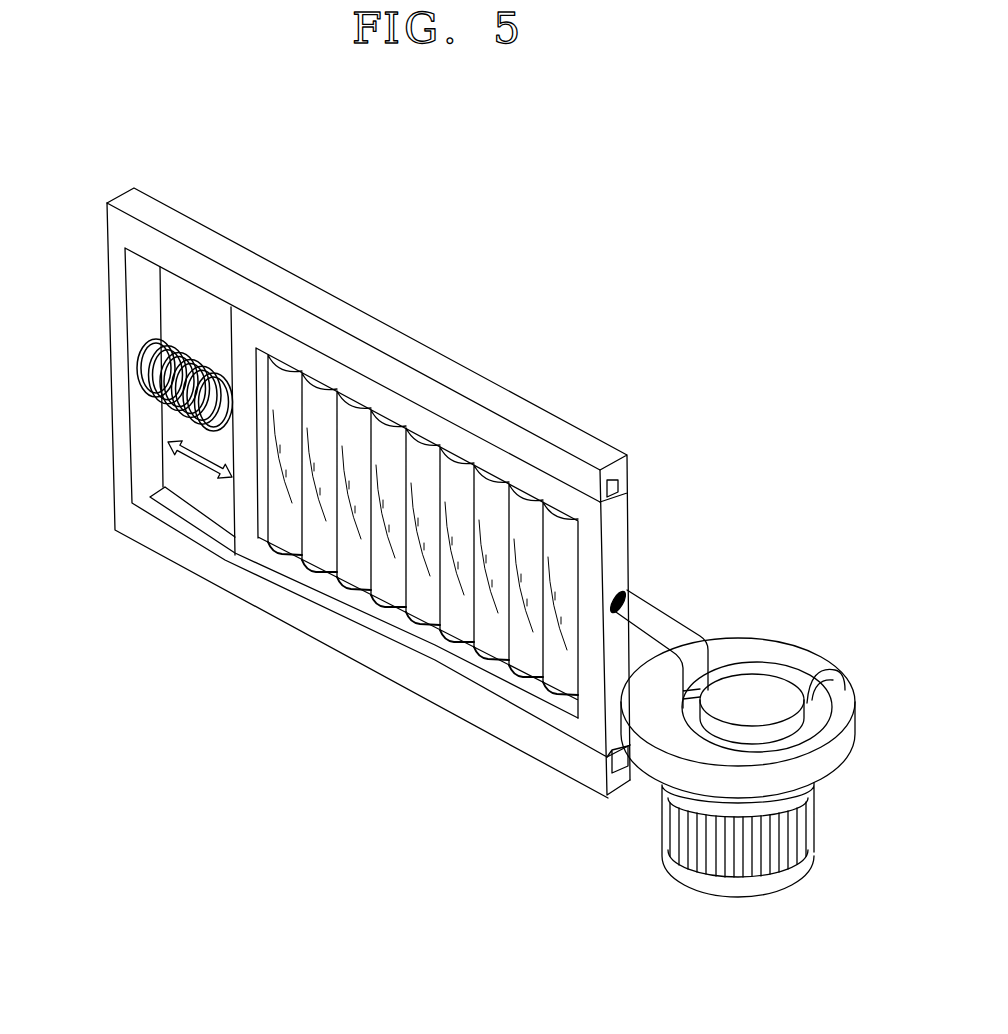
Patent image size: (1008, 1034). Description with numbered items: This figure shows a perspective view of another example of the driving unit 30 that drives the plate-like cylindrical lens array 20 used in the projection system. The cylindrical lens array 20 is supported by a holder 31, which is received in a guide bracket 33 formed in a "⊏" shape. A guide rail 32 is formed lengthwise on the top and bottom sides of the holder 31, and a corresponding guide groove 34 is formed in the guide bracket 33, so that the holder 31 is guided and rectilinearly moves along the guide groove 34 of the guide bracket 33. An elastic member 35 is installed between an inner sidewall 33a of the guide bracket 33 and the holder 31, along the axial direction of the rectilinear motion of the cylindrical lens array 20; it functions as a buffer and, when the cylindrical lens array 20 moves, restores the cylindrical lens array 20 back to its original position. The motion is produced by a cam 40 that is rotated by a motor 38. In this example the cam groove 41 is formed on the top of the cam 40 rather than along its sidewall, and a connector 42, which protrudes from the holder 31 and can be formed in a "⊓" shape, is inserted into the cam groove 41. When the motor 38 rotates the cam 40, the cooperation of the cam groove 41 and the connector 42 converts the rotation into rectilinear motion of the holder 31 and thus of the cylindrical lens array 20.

The cylindrical lens array 20 is at (518, 586).
The driving unit 30 is at (750, 617).
The holder 31 is at (244, 331).
The guide rail 32 is at (619, 491).
The guide bracket 33 is at (220, 570).
The inner sidewall 33a is at (137, 313).
The guide groove 34 is at (608, 462).
The elastic member 35 is at (148, 388).
The motor 38 is at (815, 848).
The cam 40 is at (792, 647).
The cam groove 41 is at (822, 670).
The connector 42 is at (672, 632).